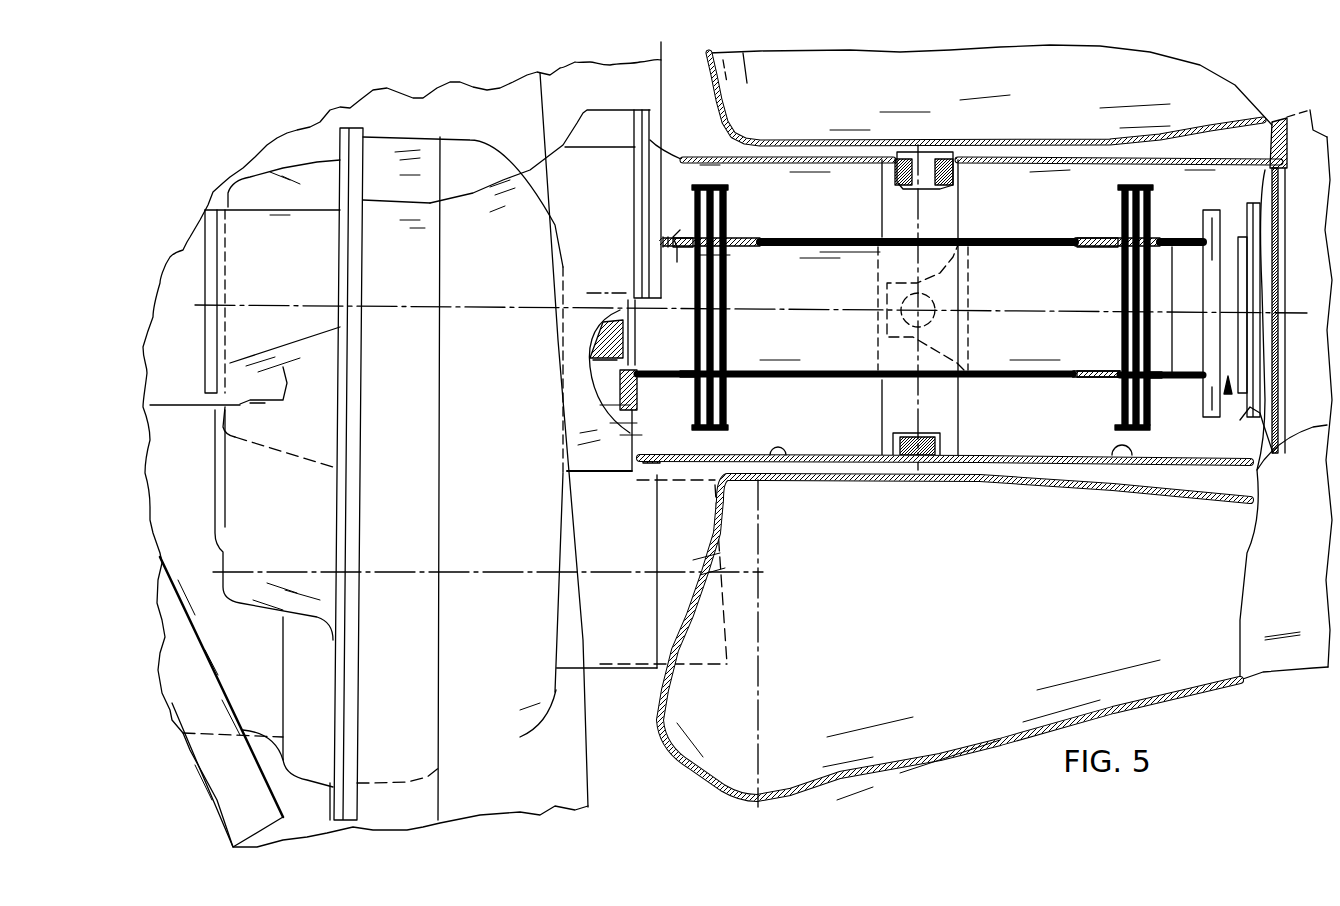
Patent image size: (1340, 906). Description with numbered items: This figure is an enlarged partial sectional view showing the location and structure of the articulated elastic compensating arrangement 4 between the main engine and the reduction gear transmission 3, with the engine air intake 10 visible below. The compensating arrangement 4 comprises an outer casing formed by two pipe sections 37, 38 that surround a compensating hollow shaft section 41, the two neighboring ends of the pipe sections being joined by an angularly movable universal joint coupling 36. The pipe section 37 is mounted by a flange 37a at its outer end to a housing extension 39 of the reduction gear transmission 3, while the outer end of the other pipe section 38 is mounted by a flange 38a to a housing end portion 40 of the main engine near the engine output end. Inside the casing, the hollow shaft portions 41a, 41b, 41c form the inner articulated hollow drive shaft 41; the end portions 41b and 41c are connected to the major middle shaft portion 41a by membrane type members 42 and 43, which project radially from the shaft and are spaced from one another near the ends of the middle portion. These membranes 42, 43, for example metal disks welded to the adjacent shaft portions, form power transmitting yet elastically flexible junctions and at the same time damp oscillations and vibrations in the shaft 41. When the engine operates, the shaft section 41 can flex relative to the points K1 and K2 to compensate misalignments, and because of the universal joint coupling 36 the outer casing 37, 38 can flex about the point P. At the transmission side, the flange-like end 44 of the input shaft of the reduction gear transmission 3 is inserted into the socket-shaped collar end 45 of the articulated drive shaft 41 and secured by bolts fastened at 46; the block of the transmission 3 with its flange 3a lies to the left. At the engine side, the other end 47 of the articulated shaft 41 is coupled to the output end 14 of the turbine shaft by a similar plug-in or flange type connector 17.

The reduction gear transmission 3 is at (482, 511).
The engine block flange 3a is at (353, 130).
The compensating arrangement 4 is at (1025, 140).
The engine air intake 10 is at (936, 622).
The output end 14 is at (1230, 290).
The plug-in or flange type connector 17 is at (1229, 398).
The universal joint coupling 36 is at (880, 140).
The pipe section 37 is at (780, 455).
The flange 37a is at (643, 110).
The pipe section 38 is at (1123, 440).
The flange 38a is at (1272, 135).
The housing extension 39 is at (583, 170).
The housing end portion 40 is at (1303, 430).
The hollow shaft section 41 is at (1008, 240).
The middle shaft portion 41a is at (843, 248).
The shaft end portion 41b is at (677, 263).
The shaft end portion 41c is at (1180, 380).
The membrane type member 42 is at (723, 213).
The membrane type member 43 is at (1113, 227).
The flange-like end 44 is at (637, 390).
The socket-shaped collar end 45 is at (630, 433).
The bolt fastening location 46 is at (650, 127).
The other end of articulated shaft 47 is at (1200, 413).
The flexing point K1 is at (707, 307).
The flexing point K2 is at (1130, 310).
The flexing point of outer casing P is at (939, 306).